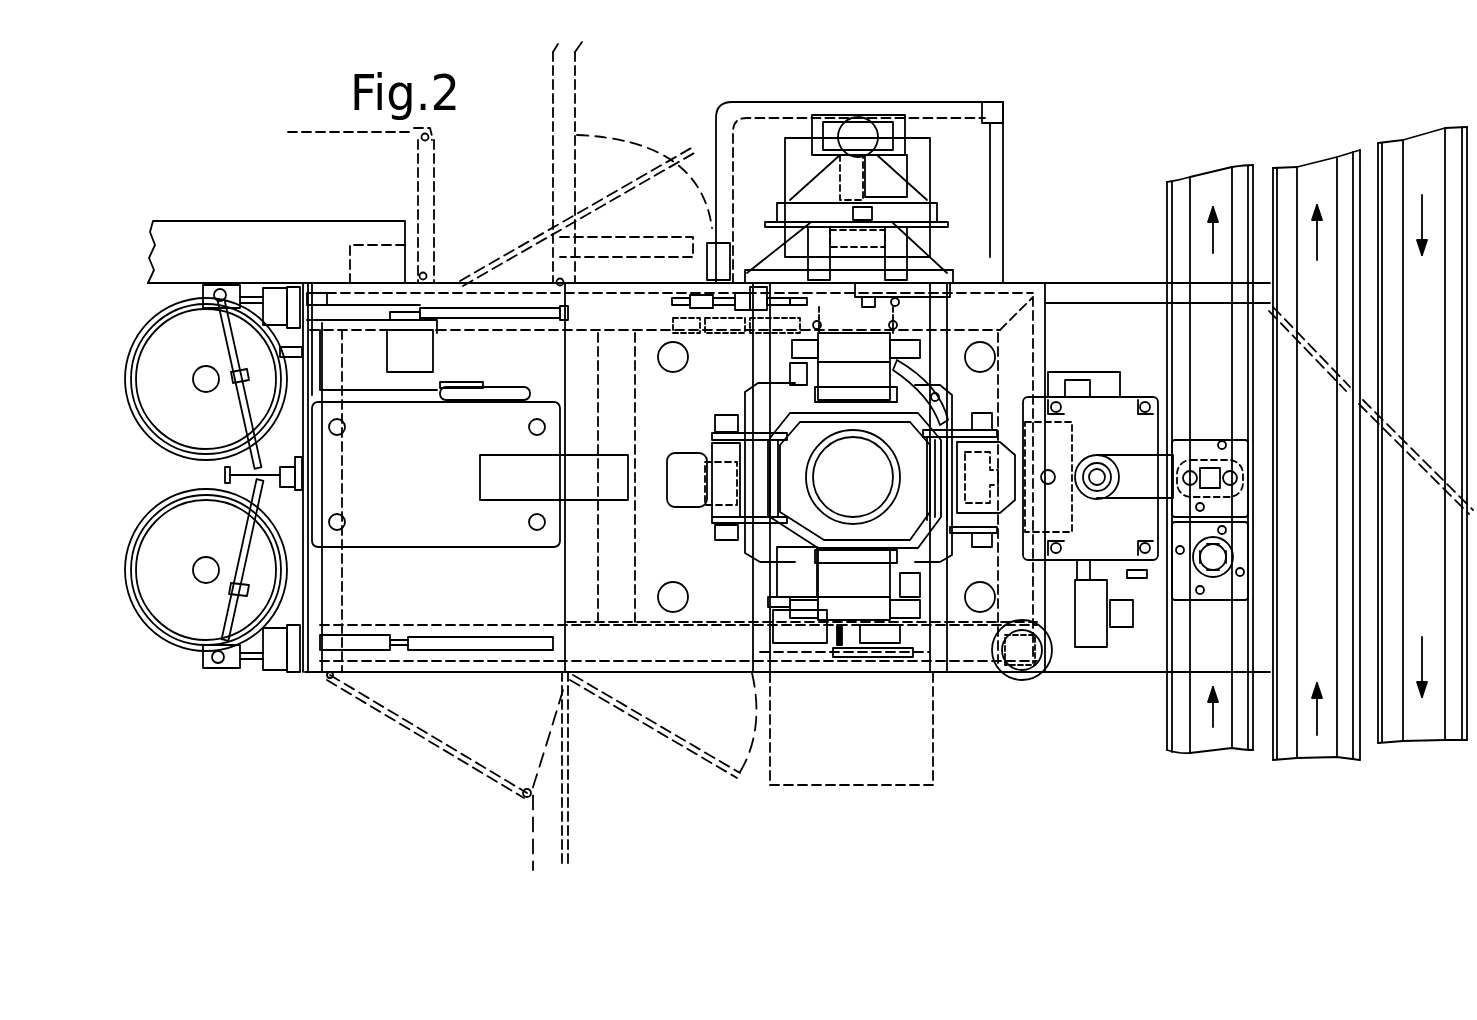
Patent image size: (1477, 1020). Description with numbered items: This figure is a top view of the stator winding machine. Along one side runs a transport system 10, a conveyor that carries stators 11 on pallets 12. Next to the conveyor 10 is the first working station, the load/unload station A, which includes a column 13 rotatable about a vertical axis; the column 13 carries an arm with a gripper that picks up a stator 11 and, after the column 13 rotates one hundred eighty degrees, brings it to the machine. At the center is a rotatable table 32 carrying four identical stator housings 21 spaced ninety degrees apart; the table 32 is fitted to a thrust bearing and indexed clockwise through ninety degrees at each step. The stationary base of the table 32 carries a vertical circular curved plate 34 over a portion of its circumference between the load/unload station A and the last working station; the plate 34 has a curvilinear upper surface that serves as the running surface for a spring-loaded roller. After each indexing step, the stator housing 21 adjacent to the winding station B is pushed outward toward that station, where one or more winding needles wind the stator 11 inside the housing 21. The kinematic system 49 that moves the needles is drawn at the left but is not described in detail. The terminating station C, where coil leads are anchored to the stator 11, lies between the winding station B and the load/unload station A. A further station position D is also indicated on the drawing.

The transport system 10 is at (1240, 640).
The stator 11 is at (1218, 543).
The pallet 12 is at (1237, 585).
The column 13 is at (1135, 482).
The stator housing 21 is at (843, 350).
The rotatable table 32 is at (807, 517).
The vertical circular curved plate 34 is at (995, 375).
The kinematic system 49 is at (148, 638).
The load/unload station A is at (1135, 387).
The winding station B is at (697, 540).
The terminating station C is at (965, 180).
The station D is at (845, 667).